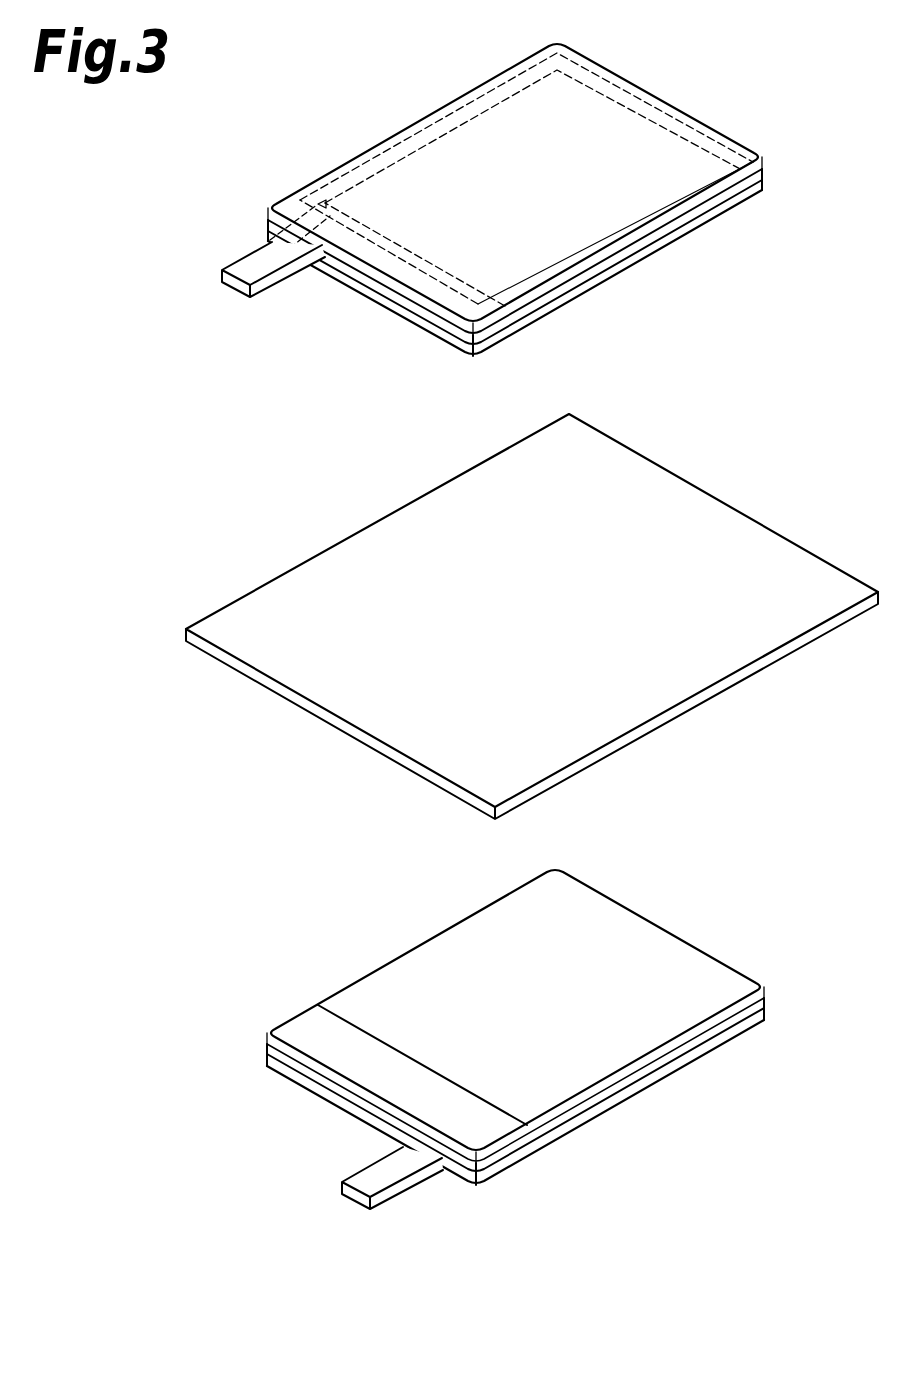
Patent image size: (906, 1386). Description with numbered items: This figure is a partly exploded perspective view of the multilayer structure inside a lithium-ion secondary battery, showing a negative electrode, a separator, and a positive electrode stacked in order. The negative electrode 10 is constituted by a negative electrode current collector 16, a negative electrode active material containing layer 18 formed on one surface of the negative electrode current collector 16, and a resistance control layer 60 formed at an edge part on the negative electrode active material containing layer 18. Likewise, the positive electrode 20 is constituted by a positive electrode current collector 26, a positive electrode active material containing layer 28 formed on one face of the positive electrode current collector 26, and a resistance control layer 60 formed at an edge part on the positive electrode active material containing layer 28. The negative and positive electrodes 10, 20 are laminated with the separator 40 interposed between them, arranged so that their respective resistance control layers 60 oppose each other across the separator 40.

The negative electrode 10 is at (534, 231).
The negative electrode current collector 16 is at (605, 258).
The negative electrode active material containing layer 18 is at (558, 298).
The resistance control layer 60 is at (507, 342).
The separator 40 is at (688, 705).
The positive electrode 20 is at (515, 1069).
The positive electrode current collector 26 is at (613, 1097).
The positive electrode active material containing layer 28 is at (558, 1112).